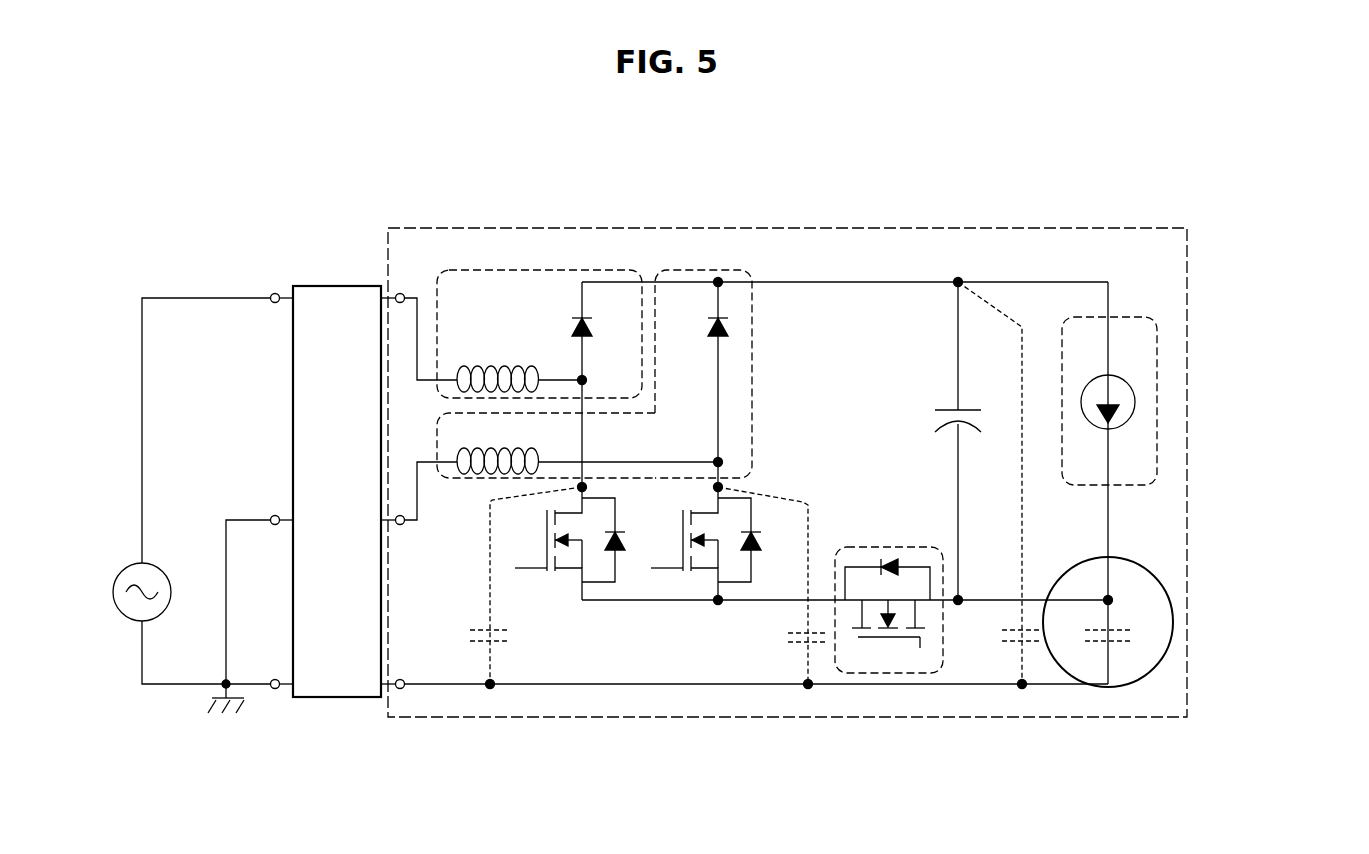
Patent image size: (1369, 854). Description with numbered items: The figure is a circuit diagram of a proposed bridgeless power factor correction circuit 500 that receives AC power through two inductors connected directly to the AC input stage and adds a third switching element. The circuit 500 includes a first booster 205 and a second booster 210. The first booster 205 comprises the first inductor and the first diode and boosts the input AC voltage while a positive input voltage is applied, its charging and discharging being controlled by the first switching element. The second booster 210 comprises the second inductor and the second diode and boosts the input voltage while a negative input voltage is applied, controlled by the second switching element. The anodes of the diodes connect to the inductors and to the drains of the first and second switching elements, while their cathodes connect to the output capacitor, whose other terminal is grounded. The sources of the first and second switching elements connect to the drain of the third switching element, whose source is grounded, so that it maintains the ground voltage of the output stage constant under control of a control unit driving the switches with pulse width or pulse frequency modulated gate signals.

The first booster 205 is at (585, 270).
The second booster 210 is at (697, 270).
The bridgeless power factor correction circuit 500 is at (1164, 129).